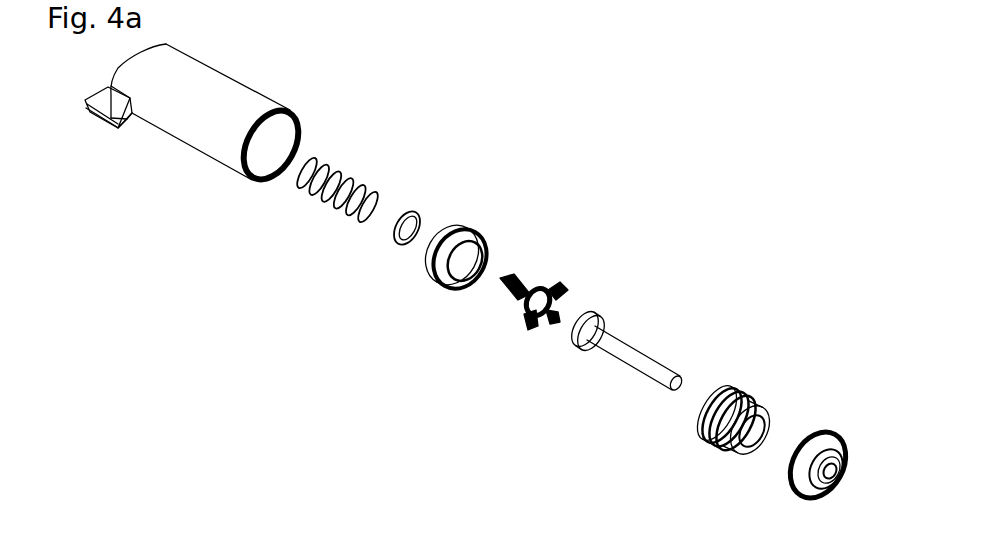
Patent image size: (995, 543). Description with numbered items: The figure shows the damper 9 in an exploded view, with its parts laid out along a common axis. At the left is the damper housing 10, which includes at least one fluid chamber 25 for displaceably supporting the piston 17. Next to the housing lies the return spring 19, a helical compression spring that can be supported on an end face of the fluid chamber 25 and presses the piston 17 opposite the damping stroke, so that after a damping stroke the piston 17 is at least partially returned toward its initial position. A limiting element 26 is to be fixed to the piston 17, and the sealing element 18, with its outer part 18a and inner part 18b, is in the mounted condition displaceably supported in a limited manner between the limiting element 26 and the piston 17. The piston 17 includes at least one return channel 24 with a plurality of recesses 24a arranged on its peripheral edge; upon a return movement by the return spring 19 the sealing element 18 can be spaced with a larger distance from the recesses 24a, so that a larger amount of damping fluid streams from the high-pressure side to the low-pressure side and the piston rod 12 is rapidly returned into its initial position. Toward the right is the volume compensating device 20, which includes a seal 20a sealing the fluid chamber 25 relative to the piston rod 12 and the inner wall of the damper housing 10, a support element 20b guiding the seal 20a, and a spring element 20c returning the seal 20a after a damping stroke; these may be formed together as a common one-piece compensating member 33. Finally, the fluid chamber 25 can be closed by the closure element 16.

The damper 9 is at (595, 188).
The damper housing 10 is at (192, 128).
The fluid chamber 25 is at (272, 140).
The return spring 19 is at (332, 203).
The limiting element 26 is at (395, 243).
The sealing element 18 is at (468, 270).
The seal outer part 18a is at (460, 232).
The seal inner part 18b is at (478, 243).
The piston 17 is at (563, 327).
The return channel 24 is at (534, 271).
The recess 24a is at (506, 320).
The piston rod 12 is at (648, 365).
The volume compensating device 20 is at (747, 426).
The compensating member 33 is at (733, 419).
The seal 20a is at (735, 383).
The support element 20b is at (755, 392).
The spring element 20c is at (770, 408).
The closure element 16 is at (838, 478).